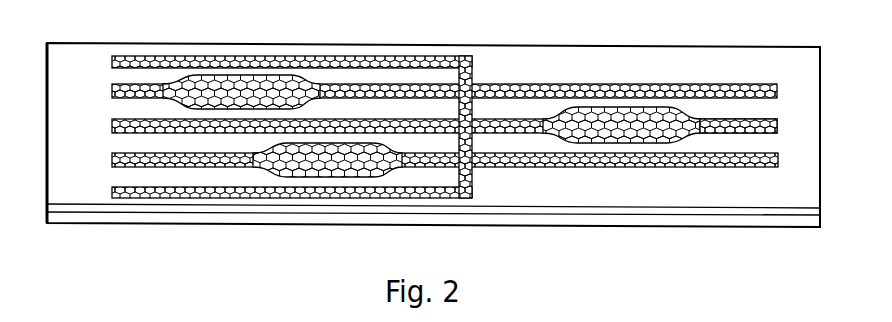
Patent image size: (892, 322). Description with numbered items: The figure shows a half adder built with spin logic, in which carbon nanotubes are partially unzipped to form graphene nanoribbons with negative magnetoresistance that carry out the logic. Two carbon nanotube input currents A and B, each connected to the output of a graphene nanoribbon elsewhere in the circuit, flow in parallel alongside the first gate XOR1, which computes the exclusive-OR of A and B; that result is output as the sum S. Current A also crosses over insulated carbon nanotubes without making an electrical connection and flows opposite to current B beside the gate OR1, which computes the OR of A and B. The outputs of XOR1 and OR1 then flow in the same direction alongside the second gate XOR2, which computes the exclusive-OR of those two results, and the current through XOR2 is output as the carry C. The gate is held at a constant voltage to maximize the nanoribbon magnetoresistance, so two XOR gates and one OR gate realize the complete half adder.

The CNT input current A is at (103, 62).
The CNT input current B is at (103, 126).
The sum output S is at (777, 92).
The carry output C is at (784, 126).
The first XOR gate XOR1 is at (241, 92).
The second XOR gate XOR2 is at (621, 125).
The OR gate OR1 is at (445, 160).